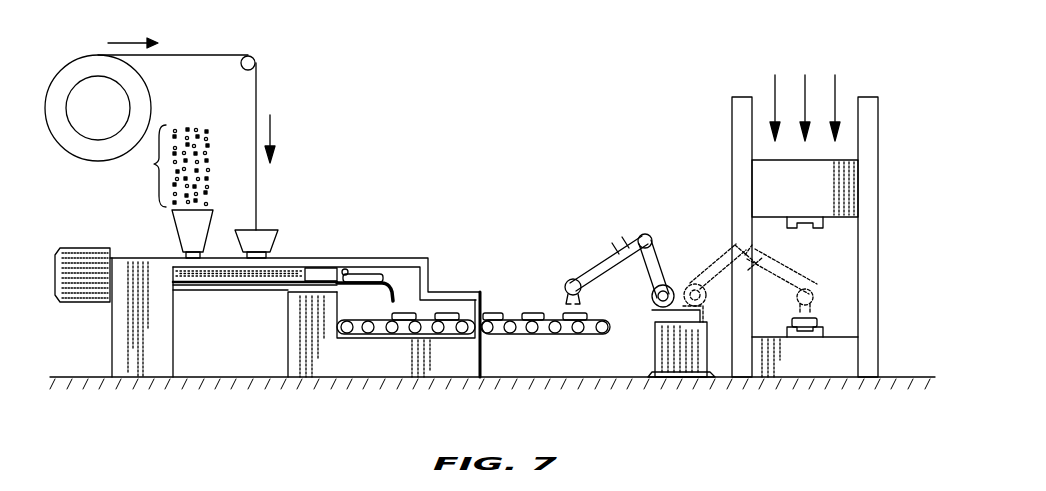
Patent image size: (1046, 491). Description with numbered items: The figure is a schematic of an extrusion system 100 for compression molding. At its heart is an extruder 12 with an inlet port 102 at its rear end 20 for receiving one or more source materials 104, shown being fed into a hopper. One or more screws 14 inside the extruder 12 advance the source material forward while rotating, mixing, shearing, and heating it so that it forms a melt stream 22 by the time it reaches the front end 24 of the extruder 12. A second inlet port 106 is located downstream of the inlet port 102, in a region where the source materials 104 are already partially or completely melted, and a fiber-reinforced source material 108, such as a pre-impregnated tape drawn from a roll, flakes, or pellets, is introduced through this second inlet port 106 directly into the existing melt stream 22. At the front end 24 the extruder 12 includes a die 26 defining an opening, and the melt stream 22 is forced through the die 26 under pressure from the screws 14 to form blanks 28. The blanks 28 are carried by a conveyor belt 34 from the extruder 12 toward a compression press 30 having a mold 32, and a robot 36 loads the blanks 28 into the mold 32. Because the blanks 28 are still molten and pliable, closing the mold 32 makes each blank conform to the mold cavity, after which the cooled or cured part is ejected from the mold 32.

The extrusion system 100 is at (560, 48).
The inlet port 102 is at (175, 240).
The source material 104 is at (154, 164).
The second inlet port 106 is at (280, 243).
The fiber-reinforced source material 108 is at (257, 93).
The extruder 12 is at (305, 273).
The screw 14 is at (270, 285).
The rear end 20 is at (192, 285).
The melt stream 22 is at (336, 263).
The front end 24 is at (358, 275).
The die 26 is at (350, 262).
The blanks 28 is at (533, 315).
The compression press 30 is at (878, 283).
The mold 32 is at (825, 223).
The conveyor belt 34 is at (563, 334).
The robot 36 is at (682, 343).